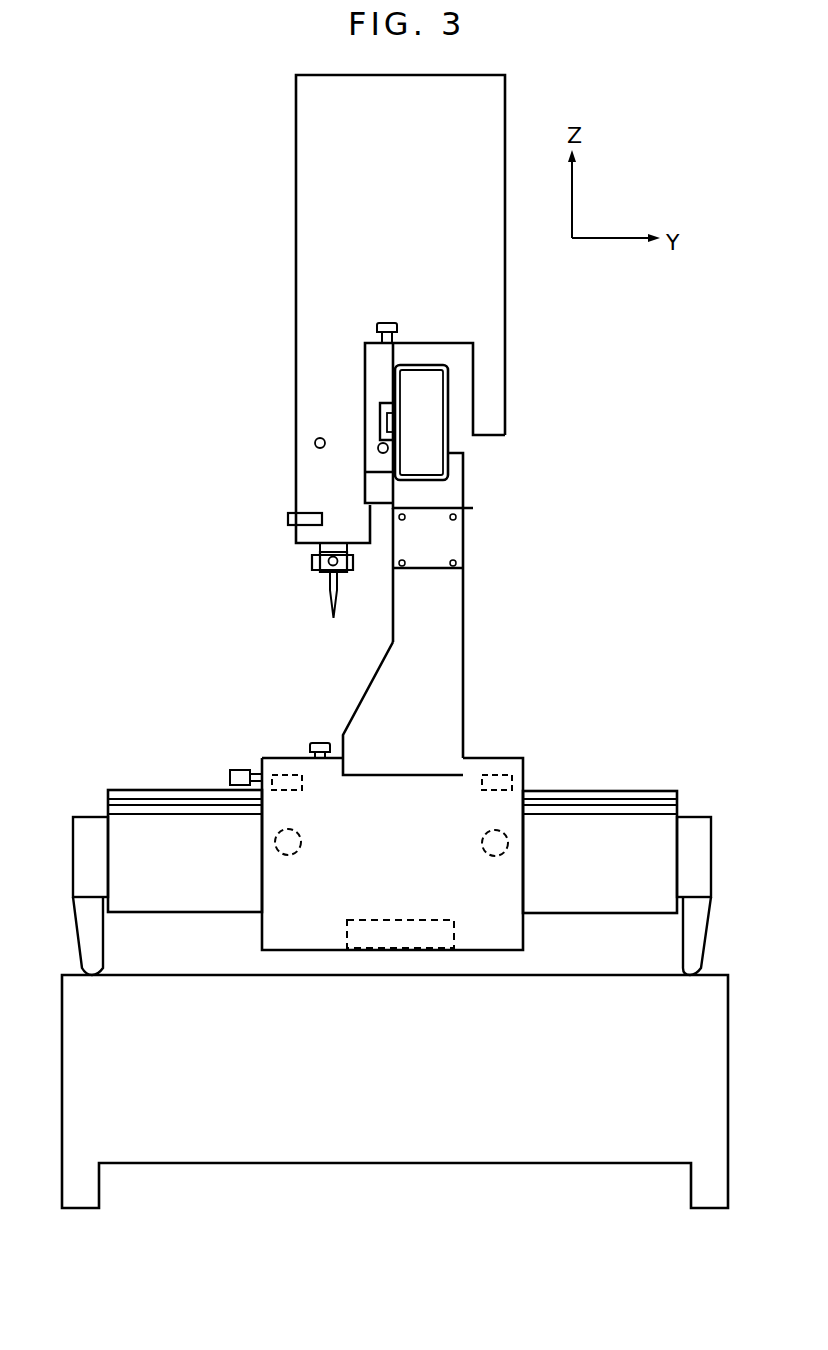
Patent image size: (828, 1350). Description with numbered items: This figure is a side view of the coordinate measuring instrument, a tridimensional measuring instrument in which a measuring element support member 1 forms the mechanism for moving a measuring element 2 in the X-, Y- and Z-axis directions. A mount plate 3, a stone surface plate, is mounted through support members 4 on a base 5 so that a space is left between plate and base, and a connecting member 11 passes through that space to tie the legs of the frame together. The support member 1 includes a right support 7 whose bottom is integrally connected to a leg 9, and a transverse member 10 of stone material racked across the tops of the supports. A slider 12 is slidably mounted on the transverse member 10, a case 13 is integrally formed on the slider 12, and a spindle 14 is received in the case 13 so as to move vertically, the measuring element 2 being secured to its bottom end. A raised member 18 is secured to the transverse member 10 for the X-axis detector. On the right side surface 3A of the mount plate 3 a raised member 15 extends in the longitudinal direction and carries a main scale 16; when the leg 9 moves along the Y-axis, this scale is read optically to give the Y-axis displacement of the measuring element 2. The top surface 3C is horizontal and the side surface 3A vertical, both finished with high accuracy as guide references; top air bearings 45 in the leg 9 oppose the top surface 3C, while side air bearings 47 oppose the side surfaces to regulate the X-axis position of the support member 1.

The measuring element support member 1 is at (452, 623).
The measuring element 2 is at (330, 585).
The mount plate 3 is at (123, 840).
The right side surface 3A is at (657, 849).
The top surface 3C is at (147, 790).
The support member 4 is at (88, 940).
The base 5 is at (415, 1163).
The right support 7 is at (462, 700).
The leg 9 is at (508, 933).
The transverse member 10 is at (432, 452).
The connecting member 11 is at (347, 948).
The slider 12 is at (376, 366).
The case 13 is at (296, 188).
The spindle 14 is at (315, 560).
The raised member 15 is at (678, 815).
The main scale 16 is at (642, 799).
The raised member 18 is at (383, 427).
The top air bearings 45 is at (286, 775).
The side air bearings 47 is at (270, 850).